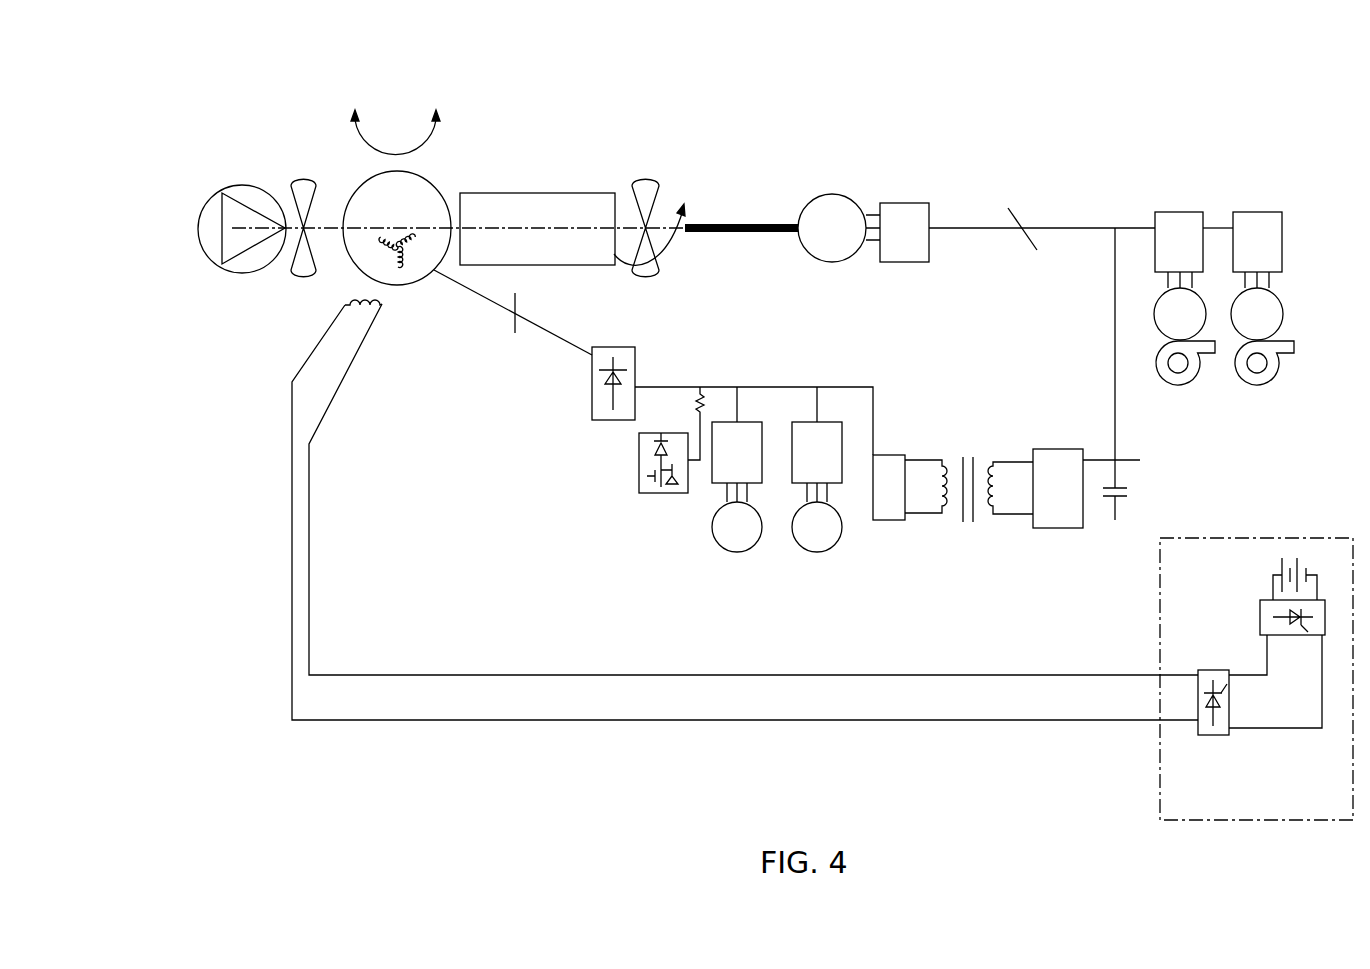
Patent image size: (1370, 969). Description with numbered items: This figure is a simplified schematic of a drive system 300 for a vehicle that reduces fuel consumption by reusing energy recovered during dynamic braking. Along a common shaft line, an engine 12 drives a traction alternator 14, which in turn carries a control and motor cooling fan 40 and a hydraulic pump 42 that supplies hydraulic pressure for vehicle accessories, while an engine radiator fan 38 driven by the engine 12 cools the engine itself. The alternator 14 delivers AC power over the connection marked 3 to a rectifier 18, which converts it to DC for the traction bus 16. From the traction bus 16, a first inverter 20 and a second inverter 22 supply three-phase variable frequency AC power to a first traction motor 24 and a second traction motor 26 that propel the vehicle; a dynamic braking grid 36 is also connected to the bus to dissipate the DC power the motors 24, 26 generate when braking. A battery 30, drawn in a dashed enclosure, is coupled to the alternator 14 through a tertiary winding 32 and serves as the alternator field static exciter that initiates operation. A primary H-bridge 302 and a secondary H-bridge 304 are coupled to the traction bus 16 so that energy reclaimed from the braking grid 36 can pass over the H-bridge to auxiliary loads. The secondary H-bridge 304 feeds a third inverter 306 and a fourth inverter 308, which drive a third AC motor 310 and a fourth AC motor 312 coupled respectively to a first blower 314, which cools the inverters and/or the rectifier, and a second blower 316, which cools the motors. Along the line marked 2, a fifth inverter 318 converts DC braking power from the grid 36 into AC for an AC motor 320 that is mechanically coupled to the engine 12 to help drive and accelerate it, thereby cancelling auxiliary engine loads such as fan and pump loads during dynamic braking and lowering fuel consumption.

The drive system 300 is at (768, 98).
The hydraulic pump 42 is at (200, 226).
The control and motor cooling fan 40 is at (295, 183).
The traction alternator 14 is at (358, 185).
The engine 12 is at (583, 193).
The engine radiator fan 38 is at (643, 180).
The AC motor 320 is at (830, 195).
The fifth inverter 318 is at (905, 203).
The power line 2 is at (1031, 235).
The third inverter 306 is at (1180, 212).
The fourth inverter 308 is at (1258, 212).
The third AC motor 310 is at (1155, 313).
The fourth AC motor 312 is at (1283, 305).
The first blower 314 is at (1180, 385).
The second blower 316 is at (1270, 383).
The power line 3 is at (505, 319).
The rectifier 18 is at (635, 350).
The traction bus 16 is at (718, 360).
The first inverter 20 is at (750, 420).
The second inverter 22 is at (830, 420).
The first traction motor 24 is at (742, 552).
The second traction motor 26 is at (822, 552).
The dynamic braking grid 36 is at (677, 502).
The primary H-bridge 302 is at (918, 452).
The secondary H-bridge 304 is at (1056, 440).
The battery 30 is at (1285, 538).
The tertiary winding 32 is at (355, 384).